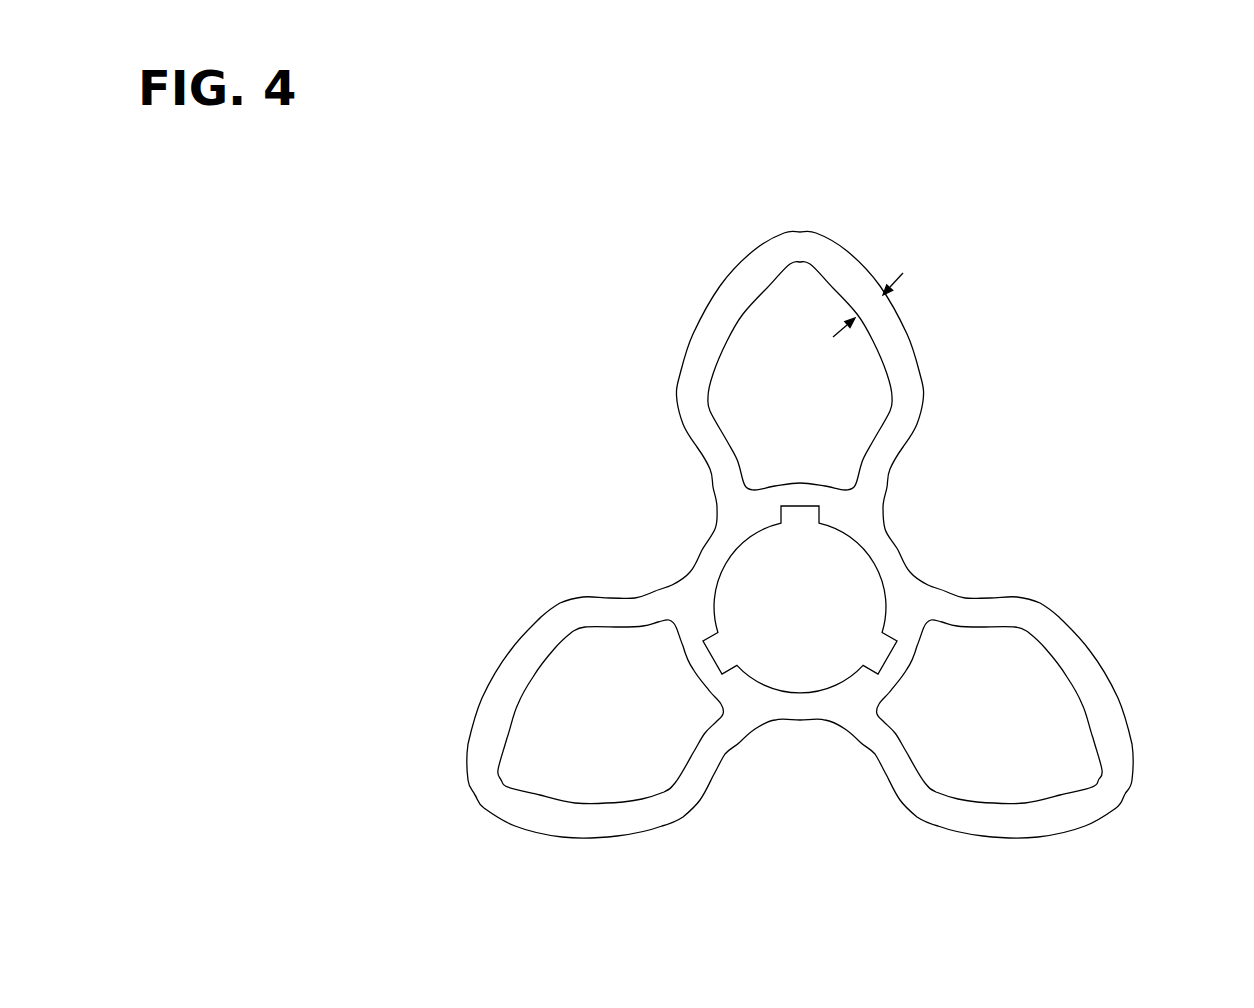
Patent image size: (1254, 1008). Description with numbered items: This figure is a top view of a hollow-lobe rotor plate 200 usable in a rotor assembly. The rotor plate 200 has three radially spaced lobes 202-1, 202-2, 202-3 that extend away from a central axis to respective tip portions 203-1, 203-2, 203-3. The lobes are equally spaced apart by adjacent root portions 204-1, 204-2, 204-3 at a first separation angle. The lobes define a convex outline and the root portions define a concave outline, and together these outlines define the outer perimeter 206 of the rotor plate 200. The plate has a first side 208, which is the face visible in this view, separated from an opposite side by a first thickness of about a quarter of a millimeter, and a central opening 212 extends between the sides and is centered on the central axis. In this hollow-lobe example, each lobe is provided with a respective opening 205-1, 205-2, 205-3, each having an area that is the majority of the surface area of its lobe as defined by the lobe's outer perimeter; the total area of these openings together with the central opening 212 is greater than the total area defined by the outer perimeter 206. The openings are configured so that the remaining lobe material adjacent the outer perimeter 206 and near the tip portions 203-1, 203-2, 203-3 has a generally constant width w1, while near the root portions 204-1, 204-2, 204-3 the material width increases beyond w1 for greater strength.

The rotor plate 200 is at (573, 228).
The lobe 202-1 is at (678, 378).
The lobe 202-2 is at (937, 820).
The lobe 202-3 is at (567, 600).
The tip portion 203-1 is at (793, 231).
The tip portion 203-2 is at (1118, 802).
The tip portion 203-3 is at (468, 783).
The root portion 204-1 is at (910, 563).
The root portion 204-2 is at (775, 720).
The root portion 204-3 is at (693, 552).
The opening 205-1 is at (827, 373).
The opening 205-2 is at (1040, 723).
The opening 205-3 is at (588, 705).
The outer perimeter 206 is at (728, 278).
The first side 208 is at (542, 810).
The central opening 212 is at (832, 665).
The first width w1 is at (885, 301).